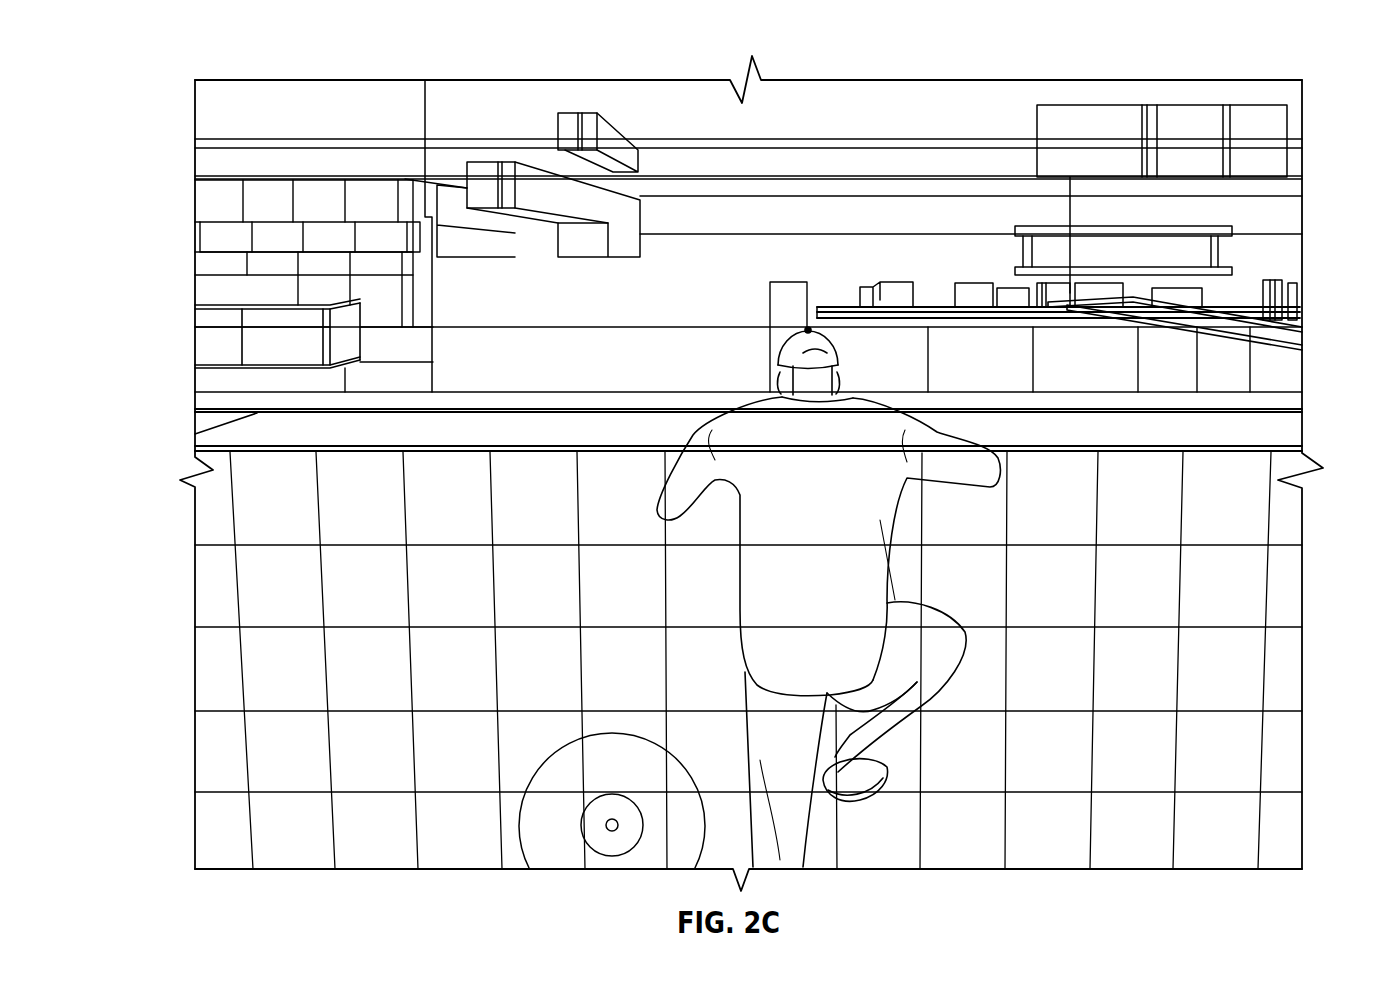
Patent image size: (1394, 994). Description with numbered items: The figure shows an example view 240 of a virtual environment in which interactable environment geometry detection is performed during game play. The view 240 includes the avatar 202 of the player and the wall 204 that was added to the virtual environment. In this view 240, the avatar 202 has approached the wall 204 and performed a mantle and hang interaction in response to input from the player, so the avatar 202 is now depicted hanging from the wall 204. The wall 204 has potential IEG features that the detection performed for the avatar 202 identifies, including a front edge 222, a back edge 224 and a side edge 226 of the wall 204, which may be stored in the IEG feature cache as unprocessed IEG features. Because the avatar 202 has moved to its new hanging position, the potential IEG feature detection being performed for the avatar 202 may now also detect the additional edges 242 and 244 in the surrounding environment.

The view 240 is at (183, 44).
The edge 242 is at (257, 303).
The edge 244 is at (975, 305).
The back edge 224 is at (990, 405).
The side edge 226 is at (1235, 313).
The front edge 222 is at (1158, 452).
The avatar 202 is at (885, 558).
The wall 204 is at (383, 589).